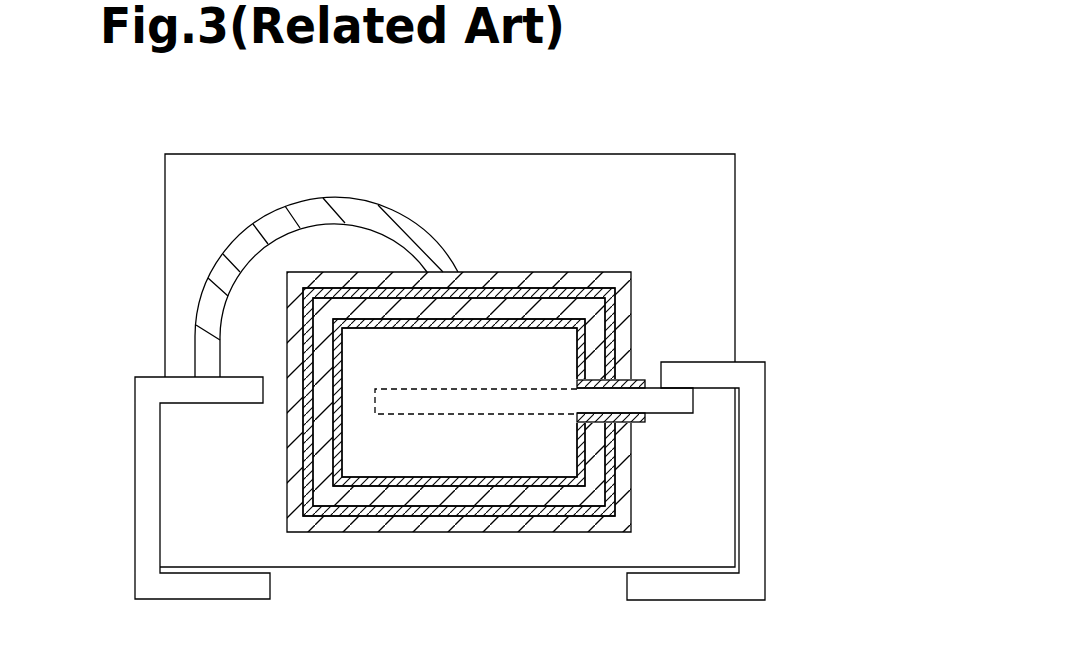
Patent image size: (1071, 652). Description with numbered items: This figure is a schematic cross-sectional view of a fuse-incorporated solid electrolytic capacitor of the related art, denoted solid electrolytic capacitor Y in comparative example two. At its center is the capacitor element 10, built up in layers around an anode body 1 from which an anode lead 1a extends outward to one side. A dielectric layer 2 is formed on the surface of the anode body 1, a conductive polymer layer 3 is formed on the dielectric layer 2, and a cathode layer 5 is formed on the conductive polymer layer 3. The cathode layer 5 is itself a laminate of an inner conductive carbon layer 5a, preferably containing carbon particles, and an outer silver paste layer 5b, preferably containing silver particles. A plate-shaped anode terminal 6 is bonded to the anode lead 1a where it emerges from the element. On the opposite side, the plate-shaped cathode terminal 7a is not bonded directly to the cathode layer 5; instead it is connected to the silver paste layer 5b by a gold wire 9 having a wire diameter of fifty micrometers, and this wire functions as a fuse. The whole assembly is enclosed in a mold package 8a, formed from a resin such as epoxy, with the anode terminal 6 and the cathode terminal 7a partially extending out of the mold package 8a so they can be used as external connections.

The anode body 1 is at (540, 462).
The anode lead 1a is at (677, 402).
The dielectric layer 2 is at (497, 479).
The conductive polymer layer 3 is at (444, 493).
The cathode layer 5 is at (459, 295).
The conductive carbon layer 5a is at (505, 293).
The silver paste layer 5b is at (548, 280).
The anode terminal 6 is at (652, 585).
The cathode terminal 7a is at (257, 582).
The mold package 8a is at (206, 160).
The gold wire 9 is at (308, 210).
The capacitor element 10 is at (554, 334).